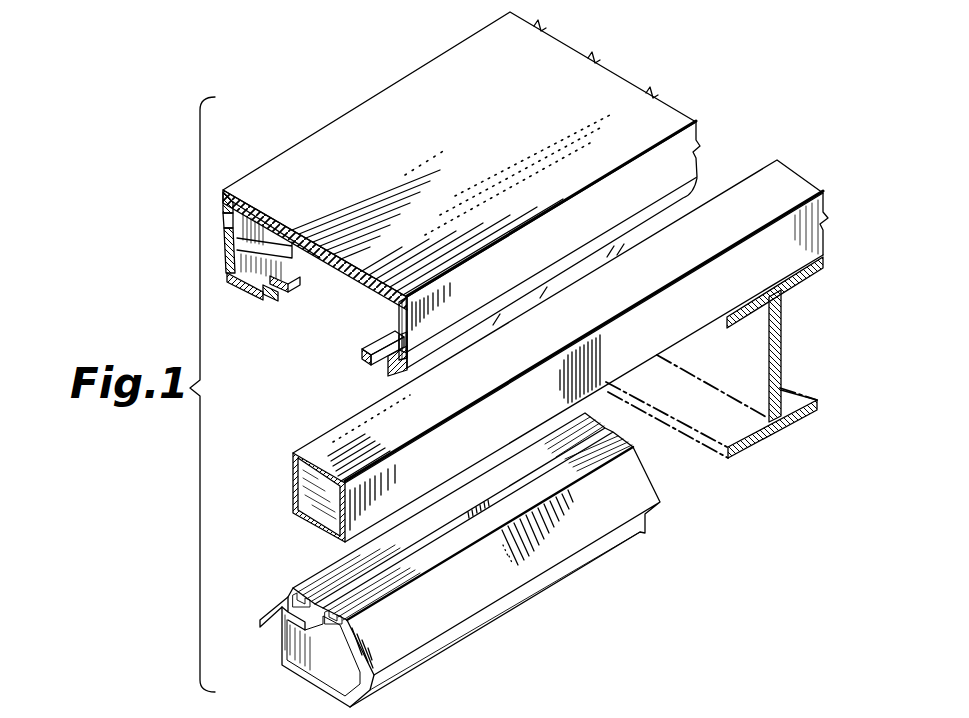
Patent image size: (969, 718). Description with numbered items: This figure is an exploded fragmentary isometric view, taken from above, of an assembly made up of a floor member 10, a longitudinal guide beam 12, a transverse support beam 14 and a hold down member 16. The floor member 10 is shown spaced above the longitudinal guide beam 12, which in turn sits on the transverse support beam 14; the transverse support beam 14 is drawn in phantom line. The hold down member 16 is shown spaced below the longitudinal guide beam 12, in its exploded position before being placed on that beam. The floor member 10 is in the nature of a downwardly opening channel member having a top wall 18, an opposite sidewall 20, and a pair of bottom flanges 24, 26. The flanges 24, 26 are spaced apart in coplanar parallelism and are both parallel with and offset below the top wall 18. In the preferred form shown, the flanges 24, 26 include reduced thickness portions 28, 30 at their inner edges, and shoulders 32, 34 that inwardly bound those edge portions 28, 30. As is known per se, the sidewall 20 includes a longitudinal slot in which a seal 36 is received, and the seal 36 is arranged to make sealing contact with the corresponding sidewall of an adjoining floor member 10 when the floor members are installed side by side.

The floor member 10 is at (438, 80).
The longitudinal guide beam 12 is at (338, 438).
The transverse support beam 14 is at (753, 392).
The hold down member 16 is at (518, 620).
The top wall 18 is at (333, 133).
The sidewall 20 is at (224, 258).
The bottom flange 24 is at (240, 282).
The bottom flange 26 is at (366, 363).
The reduced thickness portion 28 is at (300, 268).
The reduced thickness portion 30 is at (392, 330).
The shoulder 32 is at (282, 288).
The shoulder 34 is at (368, 341).
The seal 36 is at (226, 218).